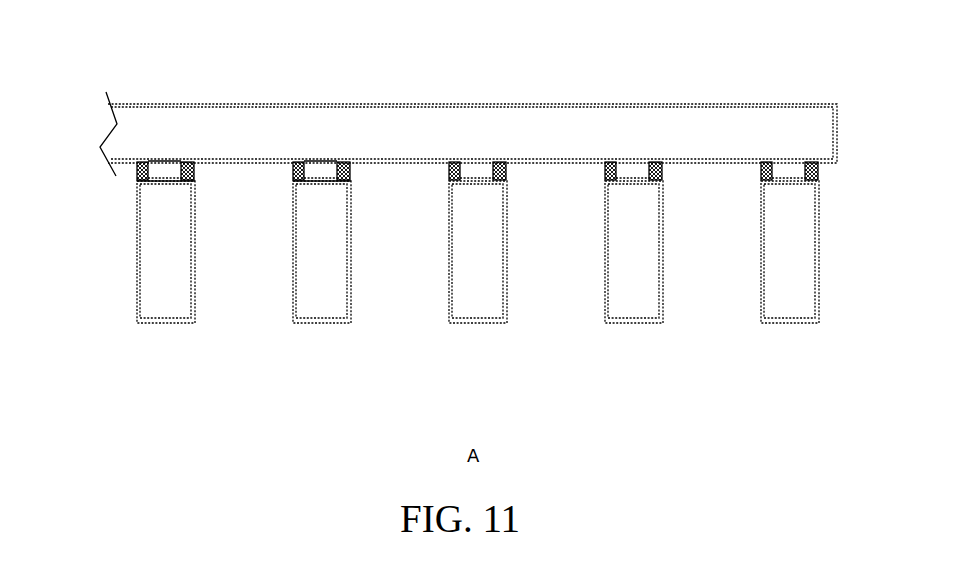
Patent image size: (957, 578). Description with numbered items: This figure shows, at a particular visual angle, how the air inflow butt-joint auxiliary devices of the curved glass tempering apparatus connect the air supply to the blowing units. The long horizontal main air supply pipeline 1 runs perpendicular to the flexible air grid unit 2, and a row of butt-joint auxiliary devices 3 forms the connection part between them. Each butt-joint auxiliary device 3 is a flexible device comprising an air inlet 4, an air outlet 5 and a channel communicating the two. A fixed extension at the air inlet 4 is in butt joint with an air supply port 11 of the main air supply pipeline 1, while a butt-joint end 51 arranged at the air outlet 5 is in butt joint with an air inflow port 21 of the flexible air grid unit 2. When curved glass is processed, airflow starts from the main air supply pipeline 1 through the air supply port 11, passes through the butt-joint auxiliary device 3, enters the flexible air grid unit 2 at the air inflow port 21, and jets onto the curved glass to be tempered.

The main air supply pipeline 1 is at (153, 296).
The air supply port 11 is at (163, 184).
The flexible air grid unit 2 is at (147, 117).
The air inflow port 21 is at (164, 158).
The butt-joint auxiliary device 3 is at (194, 181).
The air inlet 4 is at (322, 182).
The air outlet 5 is at (320, 162).
The butt-joint end 51 is at (813, 175).